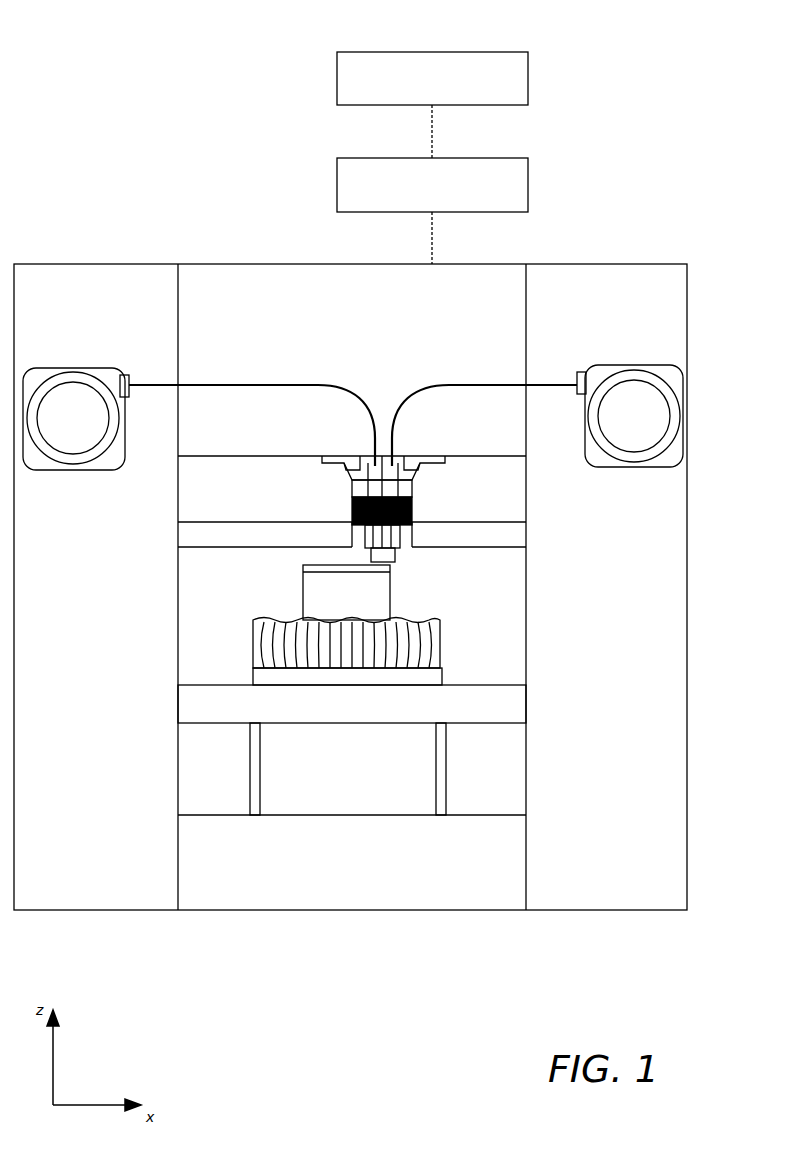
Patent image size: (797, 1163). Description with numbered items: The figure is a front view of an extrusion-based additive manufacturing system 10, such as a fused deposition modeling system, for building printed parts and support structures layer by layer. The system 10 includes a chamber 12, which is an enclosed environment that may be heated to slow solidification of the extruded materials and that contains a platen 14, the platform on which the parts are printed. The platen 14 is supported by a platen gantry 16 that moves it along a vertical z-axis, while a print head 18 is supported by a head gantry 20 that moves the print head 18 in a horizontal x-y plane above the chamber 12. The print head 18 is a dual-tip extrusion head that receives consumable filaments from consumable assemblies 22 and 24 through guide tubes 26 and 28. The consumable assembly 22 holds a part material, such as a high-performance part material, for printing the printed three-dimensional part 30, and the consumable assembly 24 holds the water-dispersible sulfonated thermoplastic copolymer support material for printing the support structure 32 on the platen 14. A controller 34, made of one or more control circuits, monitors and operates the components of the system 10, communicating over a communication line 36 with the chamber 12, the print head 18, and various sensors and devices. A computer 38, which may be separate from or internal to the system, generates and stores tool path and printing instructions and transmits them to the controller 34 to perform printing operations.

The system 10 is at (108, 66).
The chamber 12 is at (170, 641).
The platen 14 is at (522, 716).
The platen gantry 16 is at (458, 801).
The print head 18 is at (432, 505).
The head gantry 20 is at (233, 521).
The consumable assembly 22 is at (65, 368).
The consumable assembly 24 is at (603, 366).
The guide tube 26 is at (190, 385).
The guide tube 28 is at (534, 385).
The printed 3D part 30 is at (310, 603).
The support structure 32 is at (437, 676).
The controller 34 is at (528, 174).
The communication line 36 is at (433, 240).
The computer 38 is at (528, 61).